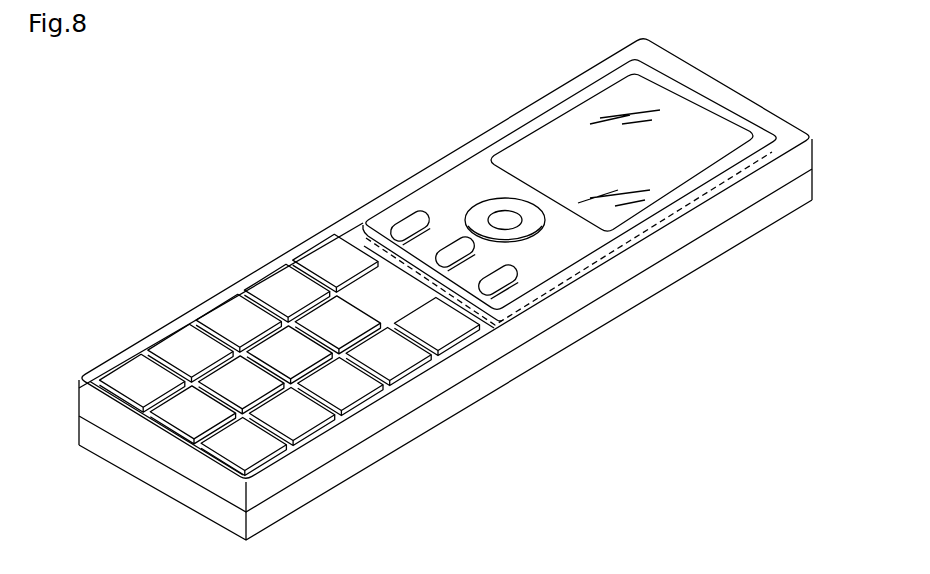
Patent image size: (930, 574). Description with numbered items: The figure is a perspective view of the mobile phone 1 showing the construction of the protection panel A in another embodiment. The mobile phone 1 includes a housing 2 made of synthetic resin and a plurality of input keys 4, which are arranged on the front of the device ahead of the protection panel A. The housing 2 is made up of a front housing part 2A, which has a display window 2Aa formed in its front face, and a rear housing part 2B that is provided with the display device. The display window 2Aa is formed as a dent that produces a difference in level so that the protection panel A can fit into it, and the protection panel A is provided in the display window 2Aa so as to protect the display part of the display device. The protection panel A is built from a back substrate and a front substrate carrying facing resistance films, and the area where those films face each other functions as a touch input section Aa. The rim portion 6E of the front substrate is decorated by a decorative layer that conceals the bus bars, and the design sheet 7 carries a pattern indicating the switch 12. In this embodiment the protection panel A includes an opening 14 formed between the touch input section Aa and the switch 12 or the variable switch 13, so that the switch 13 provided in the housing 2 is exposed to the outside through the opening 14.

The mobile phone 1 is at (445, 289).
The housing 2 is at (445, 339).
The front housing part 2A is at (482, 360).
The rear housing part 2B is at (455, 420).
The display window 2Aa is at (553, 112).
The input keys 4 is at (267, 280).
The rim portion 6E is at (664, 205).
The design sheet 7 is at (650, 92).
The switch 12 is at (447, 247).
The variable switch 13 is at (478, 210).
The opening 14 is at (528, 228).
The protection panel A is at (713, 97).
The touch input section Aa is at (723, 142).